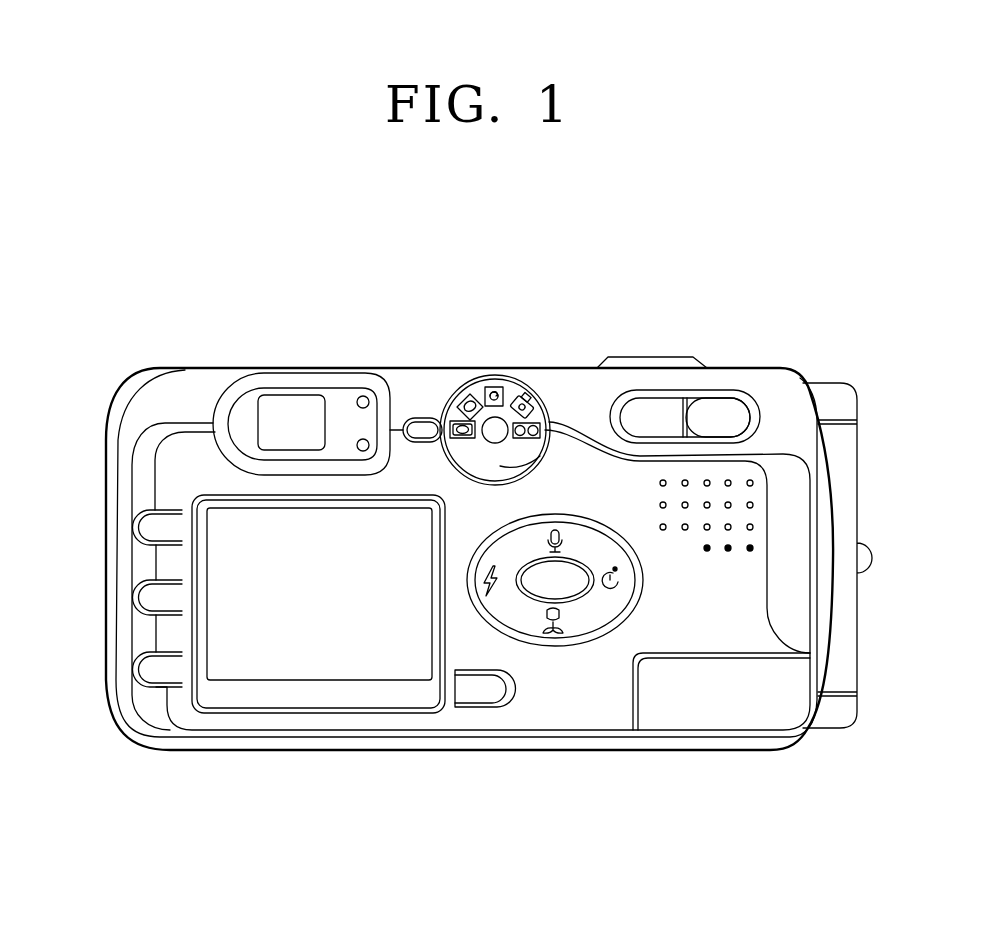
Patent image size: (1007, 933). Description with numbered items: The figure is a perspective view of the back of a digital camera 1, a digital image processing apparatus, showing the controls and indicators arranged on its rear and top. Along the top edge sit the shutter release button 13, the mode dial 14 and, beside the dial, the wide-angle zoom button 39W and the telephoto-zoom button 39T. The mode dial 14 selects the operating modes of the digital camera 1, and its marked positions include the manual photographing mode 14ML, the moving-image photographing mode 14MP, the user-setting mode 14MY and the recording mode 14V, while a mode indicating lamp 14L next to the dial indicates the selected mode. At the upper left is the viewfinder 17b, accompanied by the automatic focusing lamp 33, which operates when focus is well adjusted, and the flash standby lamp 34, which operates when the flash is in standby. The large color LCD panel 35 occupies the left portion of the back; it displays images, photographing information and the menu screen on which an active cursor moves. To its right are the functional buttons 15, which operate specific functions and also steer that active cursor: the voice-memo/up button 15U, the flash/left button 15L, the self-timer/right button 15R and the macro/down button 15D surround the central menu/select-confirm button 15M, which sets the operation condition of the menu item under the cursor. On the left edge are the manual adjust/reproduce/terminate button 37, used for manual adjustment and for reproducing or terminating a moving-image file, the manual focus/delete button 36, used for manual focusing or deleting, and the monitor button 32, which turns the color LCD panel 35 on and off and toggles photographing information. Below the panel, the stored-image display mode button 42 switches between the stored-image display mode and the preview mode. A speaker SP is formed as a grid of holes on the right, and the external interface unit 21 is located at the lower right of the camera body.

The digital camera 1 is at (795, 300).
The shutter release button 13 is at (624, 357).
The mode dial 14 is at (508, 376).
The mode indicating lamp 14L is at (425, 432).
The manual photographing mode 14ML is at (453, 436).
The moving-image photographing mode 14MP is at (530, 398).
The recording mode 14V is at (535, 426).
The user-setting mode 14MY is at (538, 462).
The functional buttons 15 is at (529, 658).
The voice-memo/up button 15U is at (541, 535).
The flash/left button 15L is at (490, 592).
The self-timer/right button 15R is at (620, 578).
The macro/down button 15D is at (567, 620).
The menu/select-confirm button 15M is at (577, 588).
The viewfinder 17b is at (290, 405).
The external interface unit 21 is at (765, 710).
The monitor button 32 is at (146, 666).
The automatic focusing lamp 33 is at (362, 396).
The flash standby lamp 34 is at (369, 441).
The color LCD panel 35 is at (312, 658).
The manual focus/delete button 36 is at (142, 596).
The manual adjust/reproduce/terminate button 37 is at (140, 526).
The wide-angle zoom button 39W is at (650, 418).
The telephoto-zoom button 39T is at (720, 418).
The stored-image display mode button 42 is at (472, 692).
The speaker SP is at (753, 548).